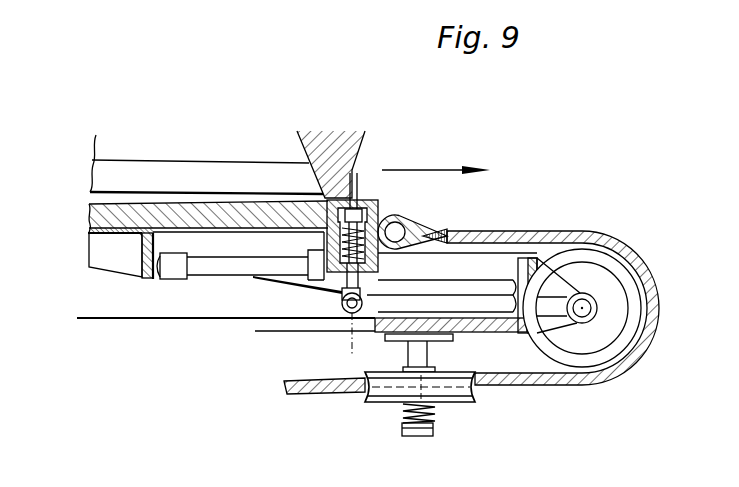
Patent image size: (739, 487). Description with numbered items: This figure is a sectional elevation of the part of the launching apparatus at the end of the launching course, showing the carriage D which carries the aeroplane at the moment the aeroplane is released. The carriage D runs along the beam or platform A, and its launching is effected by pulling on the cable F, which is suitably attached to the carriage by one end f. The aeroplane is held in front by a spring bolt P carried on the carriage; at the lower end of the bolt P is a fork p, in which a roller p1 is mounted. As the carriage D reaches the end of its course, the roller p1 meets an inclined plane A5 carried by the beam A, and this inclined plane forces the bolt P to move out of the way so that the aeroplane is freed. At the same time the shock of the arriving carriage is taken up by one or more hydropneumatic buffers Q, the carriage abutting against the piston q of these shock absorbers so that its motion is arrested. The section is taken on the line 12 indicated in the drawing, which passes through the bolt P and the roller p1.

The beam or platform A is at (93, 211).
The inclined plane A5 is at (283, 279).
The piston q is at (177, 274).
The fork p is at (342, 296).
The roller p1 is at (362, 303).
The spring bolt P is at (366, 212).
The cable end f is at (413, 233).
The hydropneumatic buffer Q is at (492, 265).
The cable F is at (597, 237).
The carriage D is at (352, 144).
The section line 12 is at (366, 266).